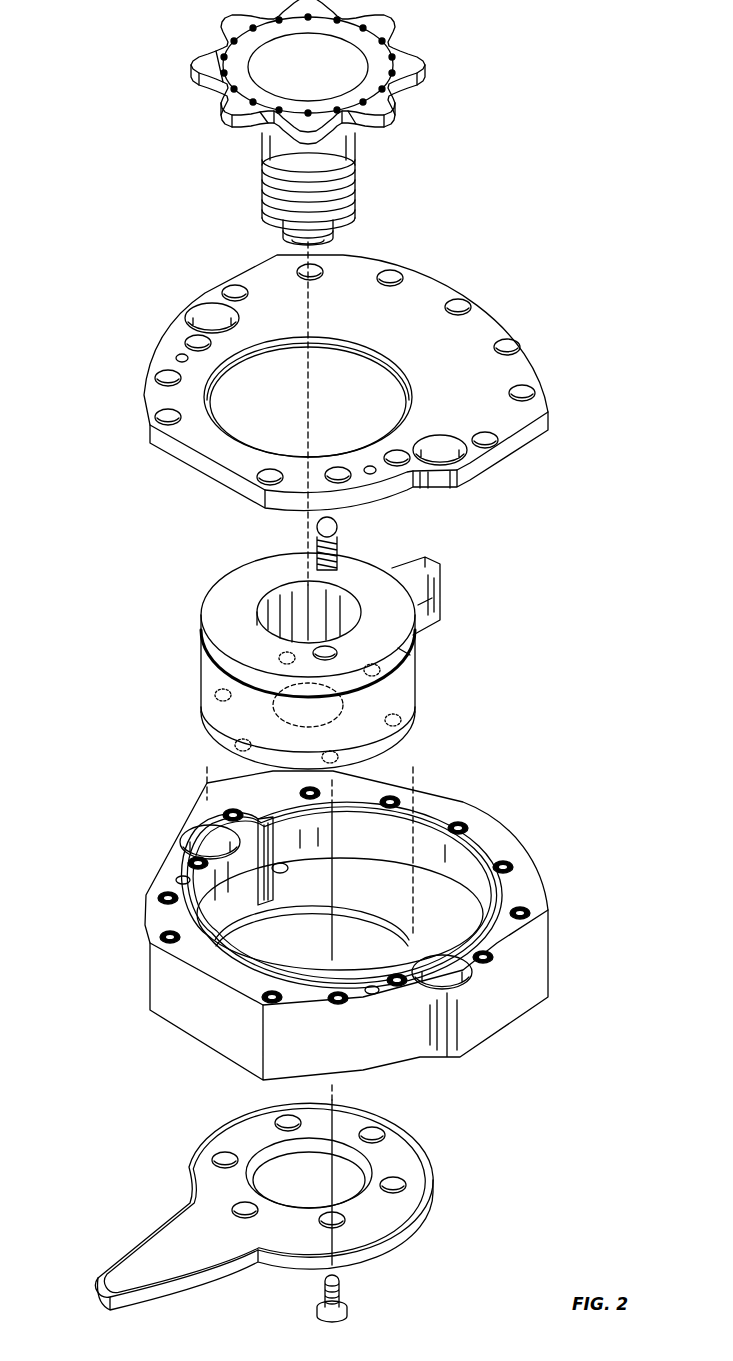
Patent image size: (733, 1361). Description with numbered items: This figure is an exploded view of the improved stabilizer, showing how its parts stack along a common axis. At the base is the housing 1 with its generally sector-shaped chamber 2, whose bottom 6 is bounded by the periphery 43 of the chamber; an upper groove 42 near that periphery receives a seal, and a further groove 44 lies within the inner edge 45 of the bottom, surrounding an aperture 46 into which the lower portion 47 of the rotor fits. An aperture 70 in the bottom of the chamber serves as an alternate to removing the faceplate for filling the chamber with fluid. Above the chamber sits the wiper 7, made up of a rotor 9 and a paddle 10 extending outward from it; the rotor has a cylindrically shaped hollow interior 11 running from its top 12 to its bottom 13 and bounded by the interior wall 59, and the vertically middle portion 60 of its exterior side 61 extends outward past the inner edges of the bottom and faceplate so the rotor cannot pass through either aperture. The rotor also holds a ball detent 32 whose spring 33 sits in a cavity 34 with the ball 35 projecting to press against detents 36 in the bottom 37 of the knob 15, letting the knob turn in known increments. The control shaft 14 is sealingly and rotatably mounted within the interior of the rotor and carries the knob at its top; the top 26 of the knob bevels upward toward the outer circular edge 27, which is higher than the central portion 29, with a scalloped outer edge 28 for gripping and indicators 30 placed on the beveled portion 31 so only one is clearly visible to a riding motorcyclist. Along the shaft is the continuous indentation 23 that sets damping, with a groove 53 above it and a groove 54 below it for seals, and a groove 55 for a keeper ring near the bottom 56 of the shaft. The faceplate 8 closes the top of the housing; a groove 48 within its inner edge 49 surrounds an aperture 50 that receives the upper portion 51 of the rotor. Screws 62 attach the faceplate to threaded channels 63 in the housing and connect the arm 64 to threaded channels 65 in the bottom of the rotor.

The housing 1 is at (332, 947).
The chamber 2 is at (487, 945).
The bottom 6 is at (392, 915).
The wiper 7 is at (283, 649).
The faceplate 8 is at (478, 323).
The rotor 9 is at (398, 695).
The paddle 10 is at (430, 590).
The hollow interior 11 is at (300, 610).
The top 12 is at (232, 621).
The bottom 13 is at (215, 790).
The control shaft 14 is at (372, 155).
The knob 15 is at (278, 57).
The continuous indentation 23 is at (318, 220).
The top 26 is at (272, 82).
The outer circular edge 27 is at (333, 190).
The scalloped outer edge 28 is at (200, 66).
The central portion 29 is at (362, 68).
The indicators 30 is at (395, 45).
The beveled portion 31 is at (398, 88).
The ball detent 32 is at (310, 545).
The spring 33 is at (338, 551).
The cavity 34 is at (328, 657).
The ball 35 is at (337, 525).
The detents 36 is at (390, 92).
The bottom 37 is at (220, 97).
The upper groove 42 is at (497, 924).
The periphery 43 is at (490, 890).
The groove 44 is at (362, 920).
The inner edge 45 is at (325, 905).
The aperture 46 is at (283, 955).
The lower portion 47 is at (365, 748).
The groove 48 is at (243, 355).
The inner edge 49 is at (373, 353).
The aperture 50 is at (375, 426).
The upper portion 51 is at (393, 655).
The groove 53 is at (266, 182).
The groove 54 is at (270, 212).
The groove 55 is at (298, 234).
The bottom 56 is at (315, 245).
The interior wall 59 is at (265, 600).
The vertically middle portion 60 is at (213, 707).
The exterior side 61 is at (207, 655).
The screws 62 is at (345, 1298).
The threaded channels 63 is at (507, 866).
The arm 64 is at (160, 1263).
The threaded channels 65 is at (375, 672).
The aperture 70 is at (281, 873).